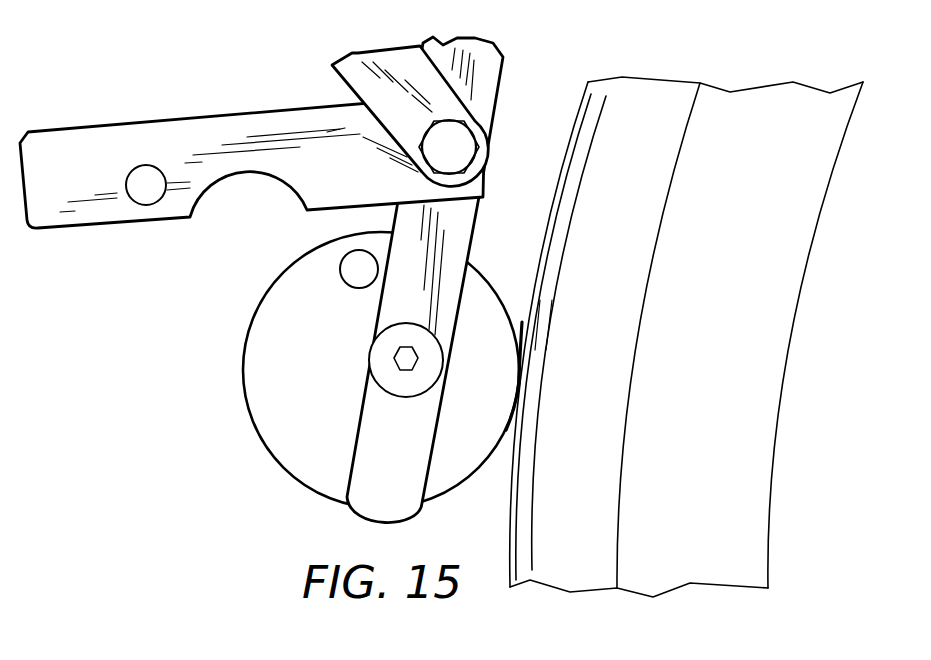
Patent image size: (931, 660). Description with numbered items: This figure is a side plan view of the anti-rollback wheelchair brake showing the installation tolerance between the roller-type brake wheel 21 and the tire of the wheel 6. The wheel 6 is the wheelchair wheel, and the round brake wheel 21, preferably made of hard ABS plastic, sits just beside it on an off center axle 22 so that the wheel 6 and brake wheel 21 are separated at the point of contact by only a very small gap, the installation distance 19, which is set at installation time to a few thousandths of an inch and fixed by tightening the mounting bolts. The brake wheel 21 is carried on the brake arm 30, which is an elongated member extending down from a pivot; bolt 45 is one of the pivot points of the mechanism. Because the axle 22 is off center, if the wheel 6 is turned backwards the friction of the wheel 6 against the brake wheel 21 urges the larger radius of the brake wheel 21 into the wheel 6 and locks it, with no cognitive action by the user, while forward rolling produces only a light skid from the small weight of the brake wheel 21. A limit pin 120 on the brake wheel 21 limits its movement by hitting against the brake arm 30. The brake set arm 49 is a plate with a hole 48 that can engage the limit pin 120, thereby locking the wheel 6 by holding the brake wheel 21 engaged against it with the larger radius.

The wheel 6 is at (632, 130).
The brake wheel 21 is at (312, 418).
The off center axle 22 is at (408, 362).
The brake arm 30 is at (476, 65).
The bolt 45 is at (447, 143).
The hole 48 is at (147, 176).
The brake set arm 49 is at (97, 213).
The limit pin 120 is at (363, 267).
The distance D19 19 is at (517, 383).